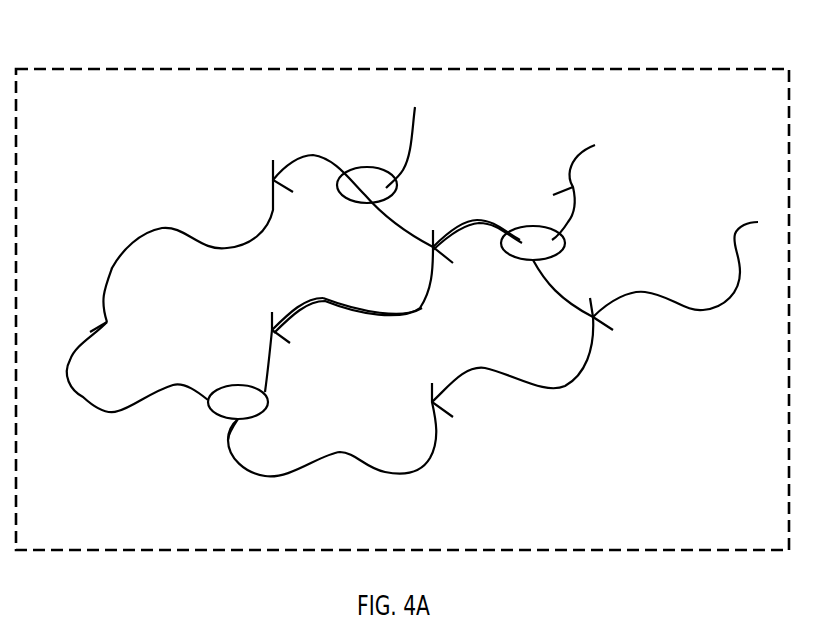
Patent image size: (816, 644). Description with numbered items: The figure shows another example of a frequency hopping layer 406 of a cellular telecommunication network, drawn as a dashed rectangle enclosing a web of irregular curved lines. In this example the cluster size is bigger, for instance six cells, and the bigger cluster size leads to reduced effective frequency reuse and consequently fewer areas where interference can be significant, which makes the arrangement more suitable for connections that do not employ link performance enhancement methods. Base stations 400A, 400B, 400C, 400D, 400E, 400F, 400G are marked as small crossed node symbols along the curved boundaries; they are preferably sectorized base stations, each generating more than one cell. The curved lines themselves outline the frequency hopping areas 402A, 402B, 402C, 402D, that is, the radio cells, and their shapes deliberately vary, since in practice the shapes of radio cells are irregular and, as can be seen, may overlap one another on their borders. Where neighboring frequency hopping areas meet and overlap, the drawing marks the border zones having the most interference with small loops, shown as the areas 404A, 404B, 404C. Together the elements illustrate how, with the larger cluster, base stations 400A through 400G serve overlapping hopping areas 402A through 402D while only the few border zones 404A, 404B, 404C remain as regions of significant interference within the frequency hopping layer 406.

The frequency hopping layer 406 is at (118, 66).
The base station 400A is at (107, 322).
The base station 400B is at (270, 185).
The base station 400C is at (433, 247).
The base station 400D is at (573, 187).
The base station 400E is at (593, 317).
The base station 400F is at (432, 402).
The base station 400G is at (272, 330).
The frequency hopping area 402A is at (84, 401).
The frequency hopping area 402B is at (404, 119).
The frequency hopping area 402C is at (702, 312).
The frequency hopping area 402D is at (267, 482).
The area with most interferences 404A is at (337, 195).
The area with most interferences 404B is at (498, 250).
The area with most interferences 404C is at (208, 412).